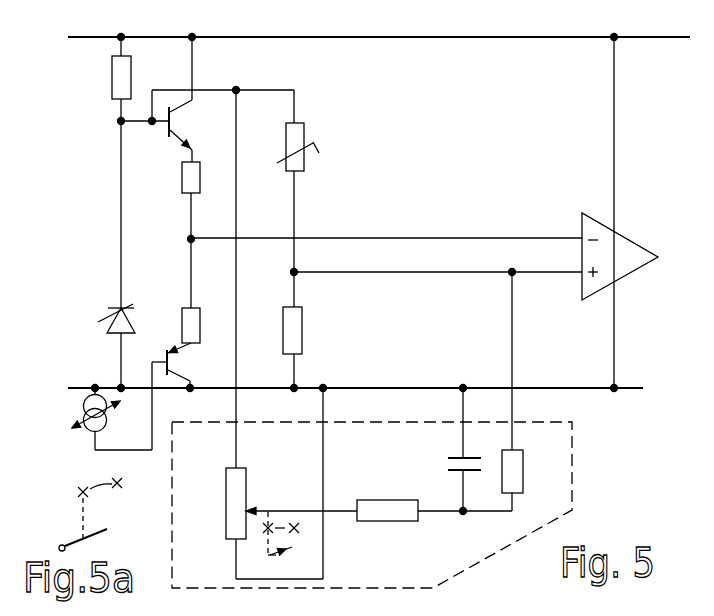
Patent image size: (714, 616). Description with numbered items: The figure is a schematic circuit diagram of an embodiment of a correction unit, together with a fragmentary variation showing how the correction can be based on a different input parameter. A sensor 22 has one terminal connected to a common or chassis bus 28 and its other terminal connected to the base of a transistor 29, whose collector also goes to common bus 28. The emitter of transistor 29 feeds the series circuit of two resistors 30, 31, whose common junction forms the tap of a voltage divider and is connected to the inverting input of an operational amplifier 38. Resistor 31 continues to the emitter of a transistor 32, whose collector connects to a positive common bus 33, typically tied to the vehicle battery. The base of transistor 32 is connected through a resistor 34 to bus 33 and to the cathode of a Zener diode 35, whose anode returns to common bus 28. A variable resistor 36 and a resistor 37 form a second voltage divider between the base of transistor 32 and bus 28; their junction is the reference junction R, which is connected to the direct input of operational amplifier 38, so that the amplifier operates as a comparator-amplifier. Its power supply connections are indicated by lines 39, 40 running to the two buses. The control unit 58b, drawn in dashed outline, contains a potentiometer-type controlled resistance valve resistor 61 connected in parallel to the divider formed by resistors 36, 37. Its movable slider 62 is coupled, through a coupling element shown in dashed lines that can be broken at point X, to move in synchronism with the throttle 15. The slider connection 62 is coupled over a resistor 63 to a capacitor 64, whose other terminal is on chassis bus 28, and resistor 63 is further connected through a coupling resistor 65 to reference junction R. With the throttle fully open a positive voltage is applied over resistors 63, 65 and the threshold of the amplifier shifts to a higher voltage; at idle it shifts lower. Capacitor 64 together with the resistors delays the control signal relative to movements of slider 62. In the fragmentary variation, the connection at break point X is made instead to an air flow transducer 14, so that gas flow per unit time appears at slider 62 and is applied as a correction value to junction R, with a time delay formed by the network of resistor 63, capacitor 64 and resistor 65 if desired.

In FIG. 5, the positive common bus 33 is at (327, 37).
In FIG. 5, the resistor 34 is at (127, 82).
In FIG. 5, the transistor 32 is at (178, 118).
In FIG. 5, the resistor 31 is at (191, 181).
In FIG. 5, the variable resistor 36 is at (298, 133).
In FIG. 5, the power supply line 39 is at (614, 118).
In FIG. 5, the operational amplifier 38 is at (622, 272).
In FIG. 5, the power supply line 40 is at (616, 330).
In FIG. 5, the Zener diode 35 is at (131, 324).
In FIG. 5, the resistor 30 is at (195, 322).
In FIG. 5, the transistor 29 is at (183, 362).
In FIG. 5, the resistor 37 is at (300, 337).
In FIG. 5, the common bus 28 is at (383, 390).
In FIG. 5, the sensor 22 is at (83, 411).
In FIG. 5, the reference junction R is at (438, 272).
In FIG. 5, the control unit 58b is at (410, 465).
In FIG. 5, the potentiometer-type resistor 61 is at (227, 505).
In FIG. 5, the movable slider 62 is at (277, 508).
In FIG. 5, the resistor 63 is at (410, 521).
In FIG. 5, the capacitor 64 is at (465, 457).
In FIG. 5, the coupling resistor 65 is at (518, 487).
In FIG. 5, the throttle 15 is at (288, 550).
In FIG. 5A, the air flow transducer 14 is at (100, 532).